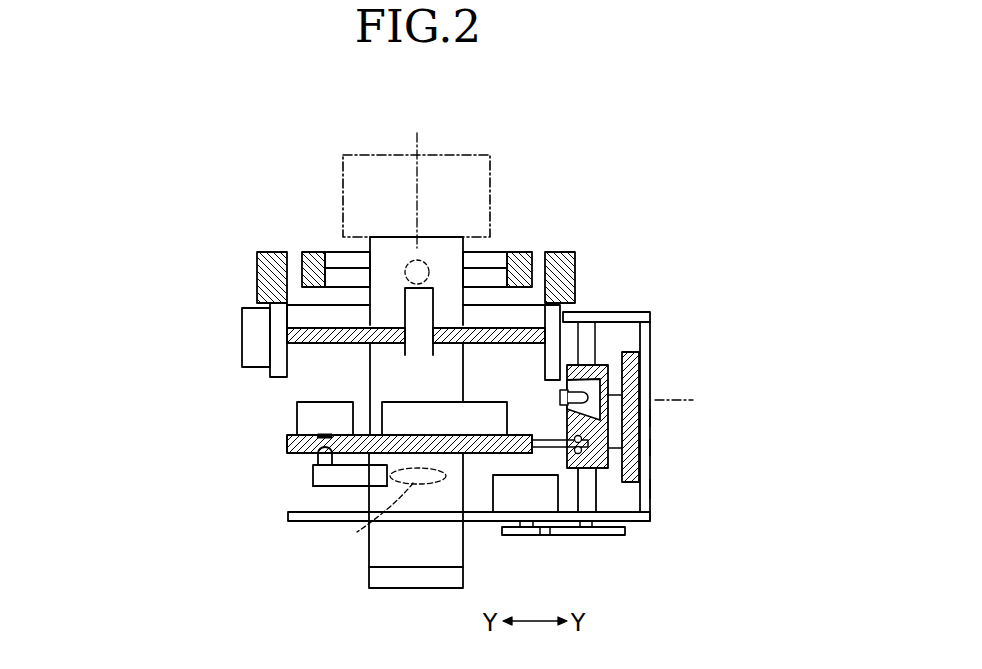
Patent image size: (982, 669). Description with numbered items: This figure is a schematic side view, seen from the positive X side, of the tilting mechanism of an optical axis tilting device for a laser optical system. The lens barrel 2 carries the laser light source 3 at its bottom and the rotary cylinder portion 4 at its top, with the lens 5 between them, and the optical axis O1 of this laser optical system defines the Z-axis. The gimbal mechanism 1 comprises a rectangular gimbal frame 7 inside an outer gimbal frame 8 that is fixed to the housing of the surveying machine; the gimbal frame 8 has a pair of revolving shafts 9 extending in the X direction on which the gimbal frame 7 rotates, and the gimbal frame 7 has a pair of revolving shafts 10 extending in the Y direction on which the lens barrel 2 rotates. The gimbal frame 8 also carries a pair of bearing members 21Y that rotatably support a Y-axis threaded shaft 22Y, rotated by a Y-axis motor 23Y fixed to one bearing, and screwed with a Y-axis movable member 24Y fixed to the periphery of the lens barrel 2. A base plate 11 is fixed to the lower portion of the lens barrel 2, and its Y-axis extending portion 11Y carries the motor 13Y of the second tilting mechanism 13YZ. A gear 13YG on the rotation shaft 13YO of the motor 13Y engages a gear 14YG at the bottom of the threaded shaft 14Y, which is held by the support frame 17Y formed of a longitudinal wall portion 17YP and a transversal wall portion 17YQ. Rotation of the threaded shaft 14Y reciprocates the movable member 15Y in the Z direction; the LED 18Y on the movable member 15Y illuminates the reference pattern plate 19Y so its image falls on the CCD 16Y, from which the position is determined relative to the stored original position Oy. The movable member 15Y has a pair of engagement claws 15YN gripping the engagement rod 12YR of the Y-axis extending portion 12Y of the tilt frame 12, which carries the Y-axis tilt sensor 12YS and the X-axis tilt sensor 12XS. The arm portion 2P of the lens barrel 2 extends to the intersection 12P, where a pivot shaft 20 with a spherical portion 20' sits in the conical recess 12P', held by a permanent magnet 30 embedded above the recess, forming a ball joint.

The gimbal mechanism 1 is at (587, 270).
The lens barrel 2 is at (373, 394).
The arm portion 2P is at (313, 478).
The laser light source 3 is at (387, 579).
The rotary cylinder portion 4 is at (462, 156).
The lens 5 is at (396, 514).
The gimbal frame 7 is at (519, 258).
The gimbal frame 8 is at (257, 278).
The revolving shaft 9 is at (428, 266).
The revolving shaft 10 is at (300, 253).
The base plate 11 is at (308, 524).
The Y-axis extending portion 11Y is at (327, 519).
The tilt frame 12 is at (460, 433).
The intersection 12P is at (213, 432).
The conical recess 12P' is at (260, 454).
The X-axis tilt sensor 12XS is at (307, 418).
The Y-axis extending portion 12Y is at (461, 457).
The engagement rod 12YR is at (543, 455).
The Y-axis tilt sensor 12YS is at (422, 418).
The motor 13Y is at (550, 493).
The gear 13YG is at (540, 536).
The rotation shaft 13YO is at (527, 536).
The second tilting mechanism 13YZ is at (656, 418).
The threaded shaft 14Y is at (591, 344).
The gear 14YG is at (610, 533).
The movable member 15Y is at (642, 463).
The engagement claw 15YN is at (570, 434).
The CCD 16Y is at (642, 358).
The support frame 17Y is at (645, 447).
The longitudinal wall portion 17YP is at (643, 488).
The transversal wall portion 17YQ is at (617, 316).
The LED 18Y is at (560, 397).
The reference pattern plate 19Y is at (640, 386).
The pivot shaft 20 is at (311, 483).
The spherical portion 20' is at (251, 482).
The bearing member 21Y is at (278, 354).
The Y-axis threaded shaft 22Y is at (315, 347).
The Y-axis motor 23Y is at (255, 327).
The Y-axis movable member 24Y is at (414, 307).
The permanent magnet 30 is at (316, 436).
The optical axis O1 is at (415, 183).
The original position Oy is at (692, 401).